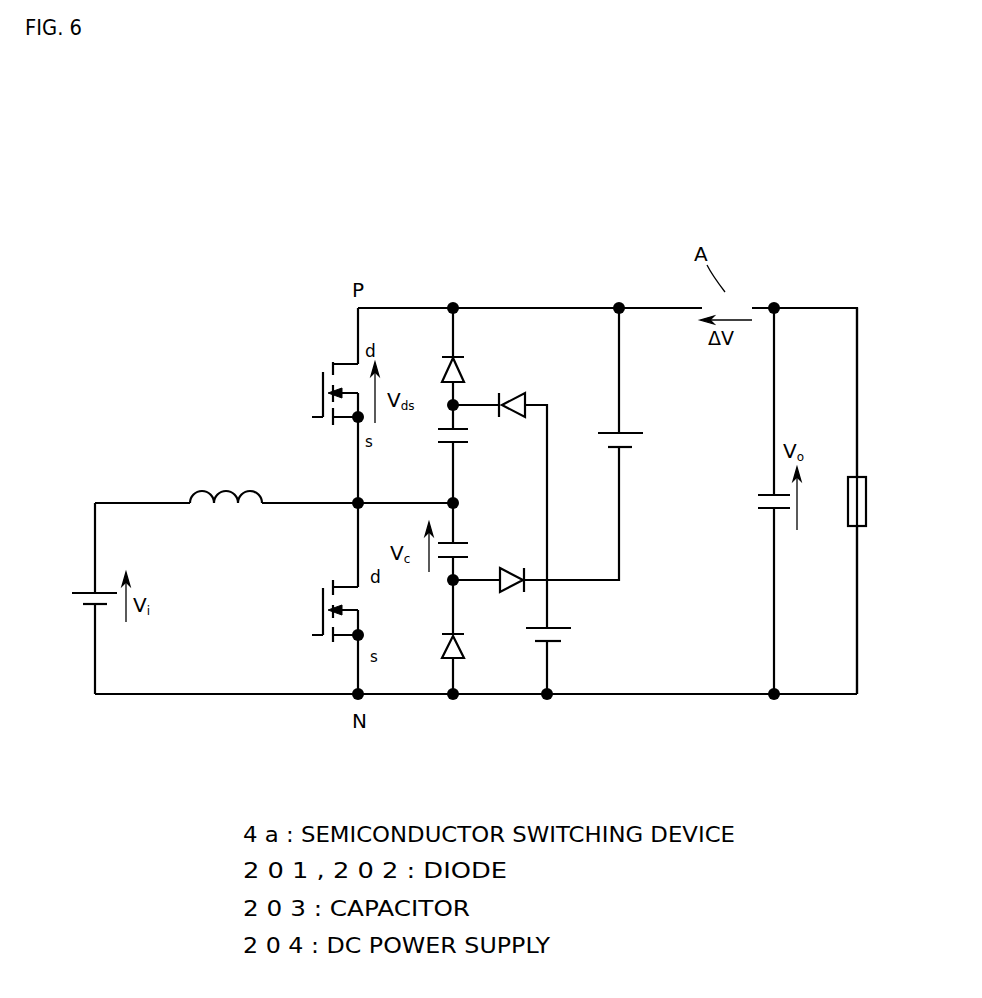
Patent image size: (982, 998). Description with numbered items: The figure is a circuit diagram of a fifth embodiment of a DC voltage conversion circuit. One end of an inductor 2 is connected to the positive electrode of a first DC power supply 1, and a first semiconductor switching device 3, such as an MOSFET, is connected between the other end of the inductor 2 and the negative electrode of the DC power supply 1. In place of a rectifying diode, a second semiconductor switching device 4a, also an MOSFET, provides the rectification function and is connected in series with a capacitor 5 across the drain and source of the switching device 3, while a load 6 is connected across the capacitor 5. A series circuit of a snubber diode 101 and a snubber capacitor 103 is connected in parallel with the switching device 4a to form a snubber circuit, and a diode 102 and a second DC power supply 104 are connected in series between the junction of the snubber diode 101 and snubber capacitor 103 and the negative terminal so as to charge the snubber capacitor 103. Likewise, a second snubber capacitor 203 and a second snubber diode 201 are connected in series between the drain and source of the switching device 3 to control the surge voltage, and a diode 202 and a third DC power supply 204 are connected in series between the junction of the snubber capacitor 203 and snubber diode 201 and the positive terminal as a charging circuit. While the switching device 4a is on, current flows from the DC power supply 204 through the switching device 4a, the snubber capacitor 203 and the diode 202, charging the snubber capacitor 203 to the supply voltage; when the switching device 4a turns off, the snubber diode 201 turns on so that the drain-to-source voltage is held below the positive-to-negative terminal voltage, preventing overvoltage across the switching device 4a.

The DC power supply 1 is at (87, 585).
The inductor 2 is at (220, 485).
The semiconductor switching device 3 is at (342, 572).
The second semiconductor switching device 4a is at (310, 377).
The capacitor 5 is at (763, 485).
The load 6 is at (867, 477).
The snubber diode 101 is at (458, 352).
The diode 102 is at (510, 390).
The snubber capacitor 103 is at (462, 448).
The second DC power supply 104 is at (572, 633).
The second snubber diode 201 is at (462, 632).
The diode 202 is at (518, 568).
The second snubber capacitor 203 is at (462, 537).
The third DC power supply 204 is at (640, 447).